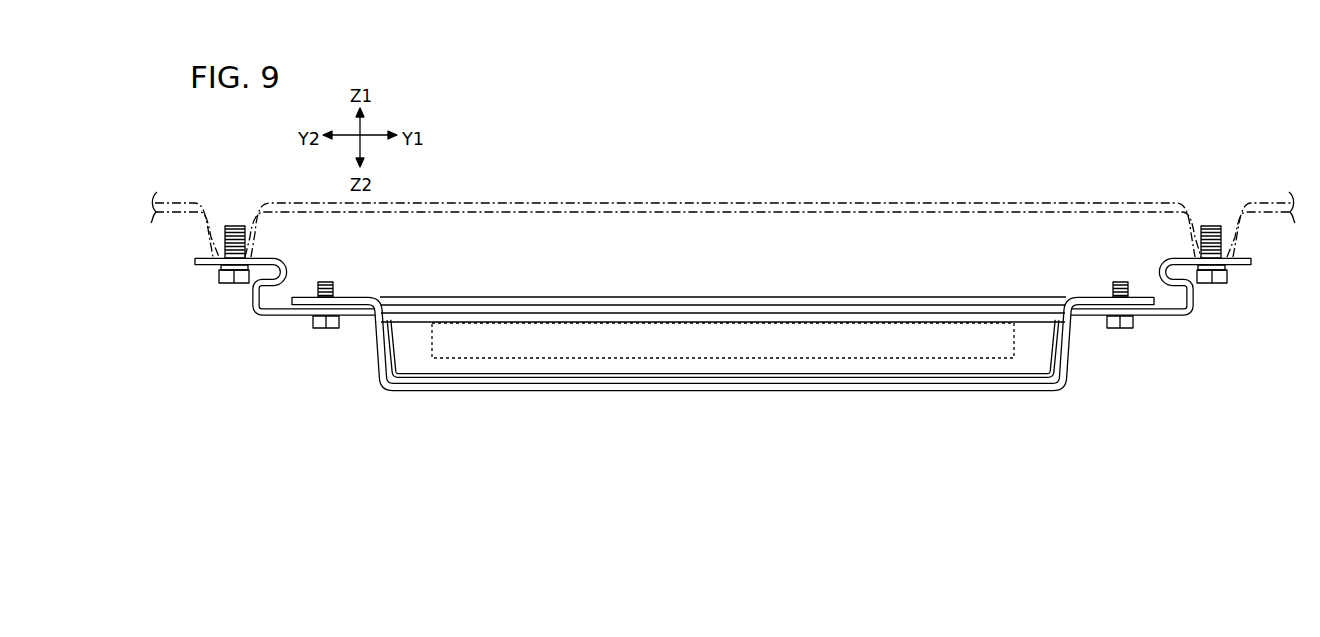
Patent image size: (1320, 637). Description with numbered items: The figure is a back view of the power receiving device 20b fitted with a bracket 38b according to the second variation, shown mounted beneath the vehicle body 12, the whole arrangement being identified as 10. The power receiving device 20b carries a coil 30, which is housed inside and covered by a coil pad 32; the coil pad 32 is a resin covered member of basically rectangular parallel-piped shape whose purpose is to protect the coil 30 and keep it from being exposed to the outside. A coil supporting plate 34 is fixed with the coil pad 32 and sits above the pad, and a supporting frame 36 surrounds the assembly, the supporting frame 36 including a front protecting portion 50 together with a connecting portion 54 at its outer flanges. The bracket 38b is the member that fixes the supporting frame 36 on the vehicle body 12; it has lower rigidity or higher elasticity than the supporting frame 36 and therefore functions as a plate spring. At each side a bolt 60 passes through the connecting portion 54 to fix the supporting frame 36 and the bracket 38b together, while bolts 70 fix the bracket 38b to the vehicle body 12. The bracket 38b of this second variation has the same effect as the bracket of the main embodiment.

The vehicle 10 is at (1024, 136).
The vehicle body 12 is at (951, 212).
The power receiving device 20b is at (510, 404).
The coil 30 is at (565, 359).
The coil pad 32 is at (705, 367).
The coil supporting plate 34 is at (641, 297).
The supporting frame 36 is at (793, 391).
The bracket 38b is at (204, 266).
The front protecting portion 50 is at (893, 387).
The connecting portion 54 is at (349, 297).
The bolt 60 is at (326, 329).
The bolts 70 is at (233, 283).